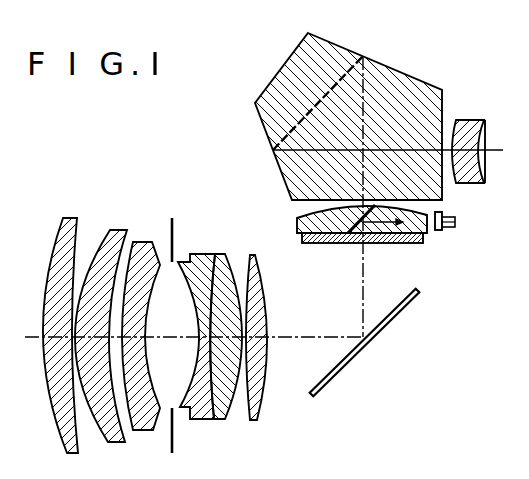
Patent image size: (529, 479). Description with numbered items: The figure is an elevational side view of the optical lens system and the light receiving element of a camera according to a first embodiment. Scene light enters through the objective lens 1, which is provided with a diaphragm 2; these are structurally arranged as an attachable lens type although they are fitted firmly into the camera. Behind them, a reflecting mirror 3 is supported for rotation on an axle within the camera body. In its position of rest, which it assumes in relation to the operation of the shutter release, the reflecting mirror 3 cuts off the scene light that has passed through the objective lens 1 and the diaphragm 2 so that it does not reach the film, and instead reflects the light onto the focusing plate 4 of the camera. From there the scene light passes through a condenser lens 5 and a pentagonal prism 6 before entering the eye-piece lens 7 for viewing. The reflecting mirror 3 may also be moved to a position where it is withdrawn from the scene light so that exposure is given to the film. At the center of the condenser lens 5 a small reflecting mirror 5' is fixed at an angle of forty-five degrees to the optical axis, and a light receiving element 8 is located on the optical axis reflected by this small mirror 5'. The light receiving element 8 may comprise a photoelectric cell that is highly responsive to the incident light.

The objective lens 1 is at (65, 219).
The diaphragm 2 is at (169, 228).
The reflecting mirror 3 is at (387, 323).
The focusing plate 4 is at (421, 243).
The condenser lens 5 is at (349, 220).
The small reflecting mirror 5' is at (355, 240).
The pentagonal prism 6 is at (356, 51).
The eye-piece lens 7 is at (468, 135).
The light receiving element 8 is at (442, 228).